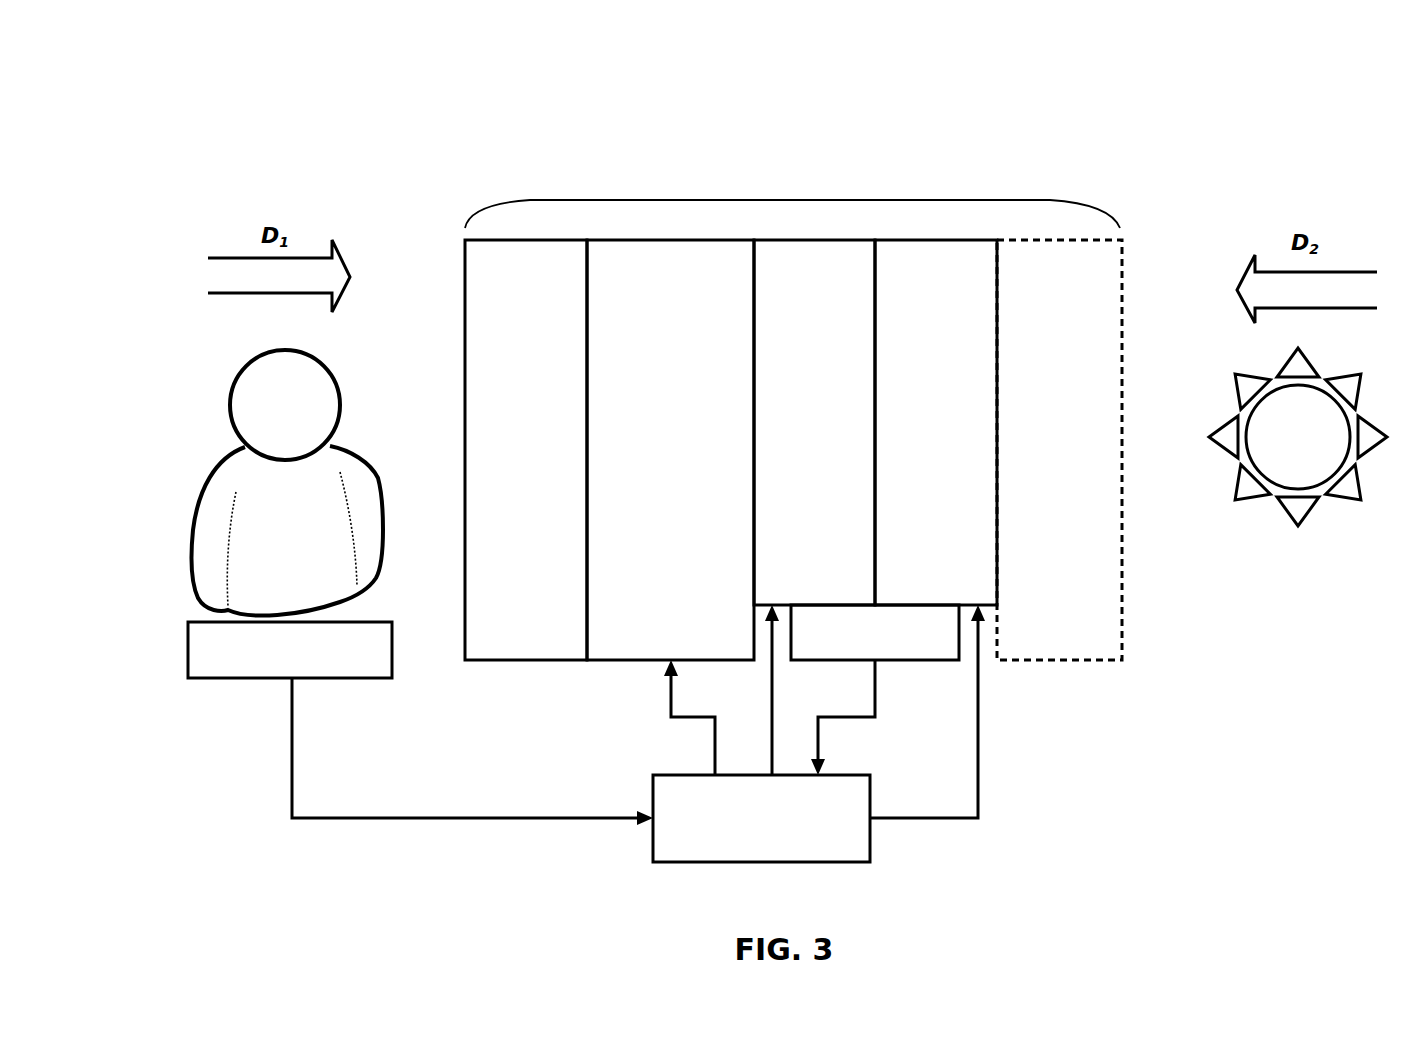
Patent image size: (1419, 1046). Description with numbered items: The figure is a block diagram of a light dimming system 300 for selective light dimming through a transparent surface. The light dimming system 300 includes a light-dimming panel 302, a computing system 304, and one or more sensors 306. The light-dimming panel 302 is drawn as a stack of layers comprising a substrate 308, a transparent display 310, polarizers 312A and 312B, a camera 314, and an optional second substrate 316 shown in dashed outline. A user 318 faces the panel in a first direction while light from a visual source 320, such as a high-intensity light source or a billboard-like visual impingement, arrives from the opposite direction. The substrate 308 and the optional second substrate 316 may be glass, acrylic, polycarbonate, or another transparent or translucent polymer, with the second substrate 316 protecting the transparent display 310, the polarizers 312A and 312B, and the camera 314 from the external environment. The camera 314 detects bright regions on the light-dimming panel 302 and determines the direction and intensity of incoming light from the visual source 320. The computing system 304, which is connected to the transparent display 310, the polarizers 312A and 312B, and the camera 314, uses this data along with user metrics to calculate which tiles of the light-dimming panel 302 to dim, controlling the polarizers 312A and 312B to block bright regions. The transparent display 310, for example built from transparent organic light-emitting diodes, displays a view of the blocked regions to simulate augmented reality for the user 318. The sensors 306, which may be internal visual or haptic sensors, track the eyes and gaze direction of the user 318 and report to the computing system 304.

The light dimming system 300 is at (231, 78).
The light-dimming panel 302 is at (792, 198).
The computing system 304 is at (833, 850).
The sensors 306 is at (360, 665).
The substrate 308 is at (504, 480).
The transparent display 310 is at (742, 480).
The polarizer 312A is at (784, 455).
The polarizer 312B is at (905, 455).
The camera 314 is at (949, 645).
The optional second substrate 316 is at (1037, 482).
The user 318 is at (267, 542).
The visual source 320 is at (1275, 450).